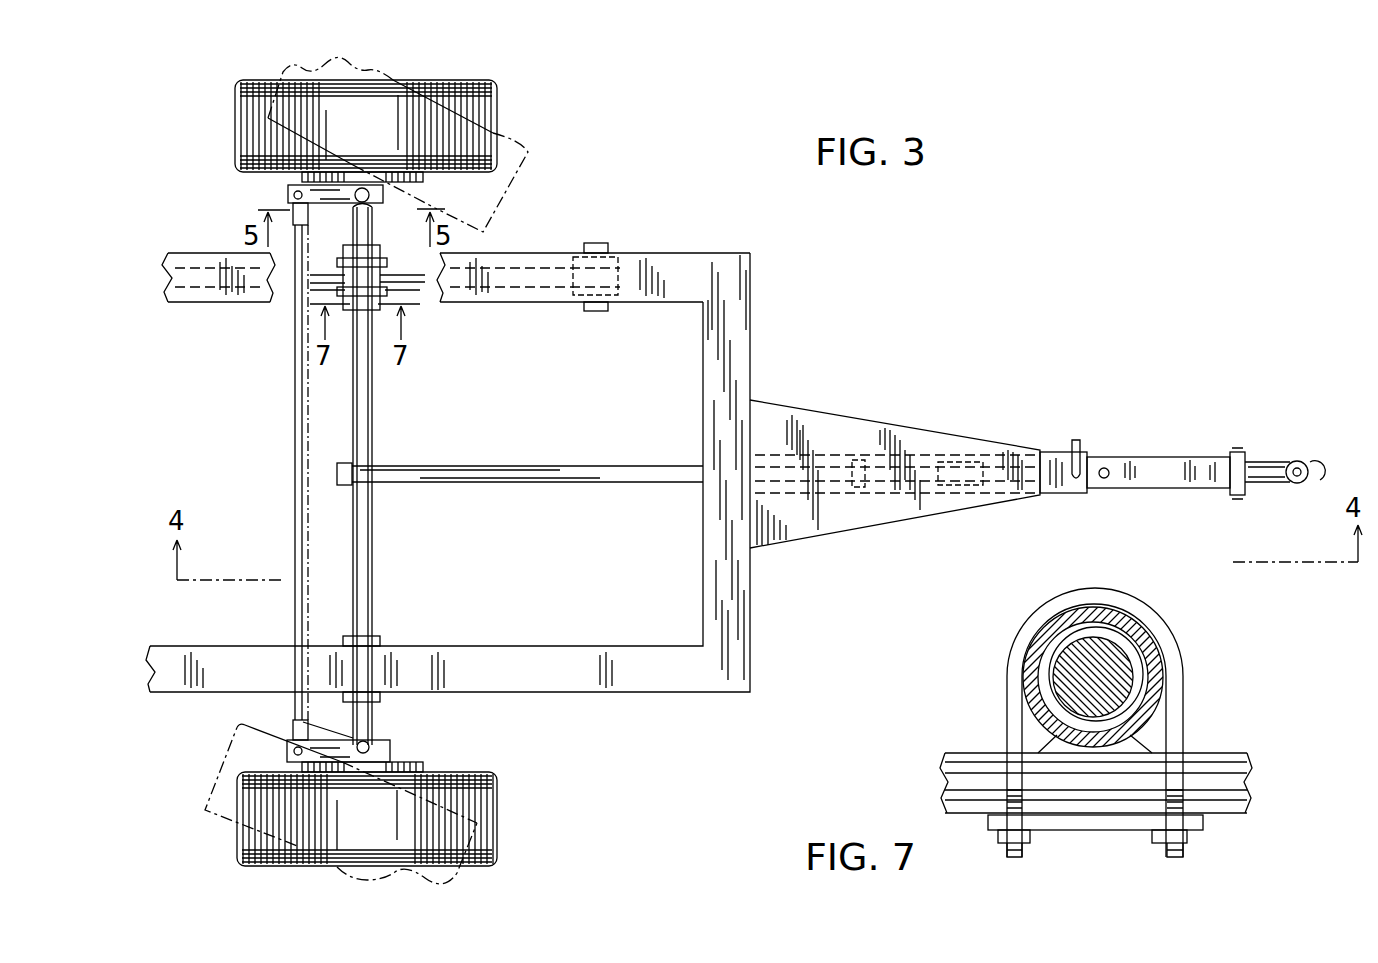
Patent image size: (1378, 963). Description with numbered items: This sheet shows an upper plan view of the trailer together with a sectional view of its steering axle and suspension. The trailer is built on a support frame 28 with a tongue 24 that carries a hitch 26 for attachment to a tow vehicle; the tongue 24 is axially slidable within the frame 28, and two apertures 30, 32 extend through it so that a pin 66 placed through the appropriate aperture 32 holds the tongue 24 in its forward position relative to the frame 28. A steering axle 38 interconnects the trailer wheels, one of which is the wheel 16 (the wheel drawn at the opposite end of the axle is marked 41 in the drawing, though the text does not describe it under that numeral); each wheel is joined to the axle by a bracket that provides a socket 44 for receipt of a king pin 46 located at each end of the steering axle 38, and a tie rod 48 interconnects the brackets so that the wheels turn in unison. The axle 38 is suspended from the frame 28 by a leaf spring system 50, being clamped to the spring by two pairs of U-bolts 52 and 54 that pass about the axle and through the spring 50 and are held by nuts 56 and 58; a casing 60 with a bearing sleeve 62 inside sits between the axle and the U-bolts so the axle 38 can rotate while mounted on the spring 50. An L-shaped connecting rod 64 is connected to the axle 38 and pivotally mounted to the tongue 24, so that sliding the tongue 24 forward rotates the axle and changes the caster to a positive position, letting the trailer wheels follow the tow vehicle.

In FIG. 3, the wheel 16 is at (333, 830).
In FIG. 3, the tongue 24 is at (1171, 451).
In FIG. 3, the hitch 26 is at (1312, 462).
In FIG. 3, the support frame 28 is at (742, 316).
In FIG. 3, the aperture 30 is at (1107, 468).
In FIG. 3, the aperture 32 is at (1078, 493).
In FIG. 7, the steering axle 38 is at (1110, 652).
In FIG. 3, the front wheel 41 is at (390, 80).
In FIG. 3, the socket 44 is at (375, 751).
In FIG. 3, the king pin 46 is at (369, 744).
In FIG. 3, the tie rod 48 is at (293, 412).
In FIG. 7, the leaf spring system 50 is at (1235, 781).
In FIG. 3, the U-bolt 52 is at (384, 266).
In FIG. 7, the U-bolt 52 is at (1180, 735).
In FIG. 3, the U-bolt 54 is at (380, 305).
In FIG. 7, the nut 56 is at (1030, 840).
In FIG. 7, the nut 58 is at (1192, 840).
In FIG. 7, the casing 60 is at (1046, 656).
In FIG. 7, the bearing sleeve 62 is at (1038, 701).
In FIG. 3, the L-shaped connecting rod 64 is at (503, 485).
In FIG. 3, the pin 66 is at (1073, 445).